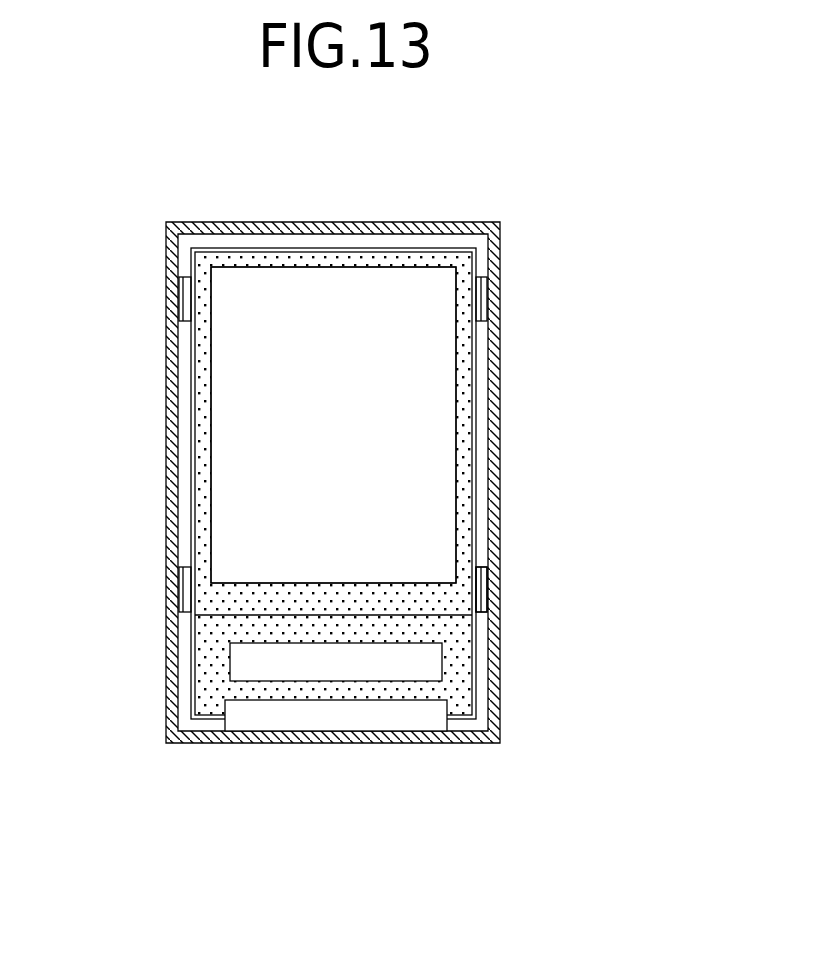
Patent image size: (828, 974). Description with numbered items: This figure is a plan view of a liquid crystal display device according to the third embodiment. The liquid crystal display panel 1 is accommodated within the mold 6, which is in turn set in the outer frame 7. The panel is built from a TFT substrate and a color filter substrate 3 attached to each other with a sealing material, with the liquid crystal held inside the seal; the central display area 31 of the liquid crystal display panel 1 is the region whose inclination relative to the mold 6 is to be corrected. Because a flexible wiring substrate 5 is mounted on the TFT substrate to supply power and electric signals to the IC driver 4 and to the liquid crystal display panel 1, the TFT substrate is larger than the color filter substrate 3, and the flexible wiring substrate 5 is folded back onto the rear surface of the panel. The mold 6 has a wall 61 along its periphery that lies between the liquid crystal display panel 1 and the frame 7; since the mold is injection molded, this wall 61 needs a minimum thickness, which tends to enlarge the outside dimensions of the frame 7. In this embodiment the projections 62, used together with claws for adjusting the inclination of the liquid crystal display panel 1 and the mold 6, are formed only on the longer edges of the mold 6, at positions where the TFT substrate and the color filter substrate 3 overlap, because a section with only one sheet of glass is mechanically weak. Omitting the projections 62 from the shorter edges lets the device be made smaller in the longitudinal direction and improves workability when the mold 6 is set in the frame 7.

The liquid crystal display panel 1 is at (440, 436).
The color filter substrate 3 is at (467, 452).
The display area 31 is at (447, 375).
The IC driver 4 is at (428, 662).
The flexible wiring substrate 5 is at (429, 715).
The mold 6 is at (478, 517).
The wall 61 is at (485, 590).
The projections 62 is at (483, 557).
The frame 7 is at (172, 463).